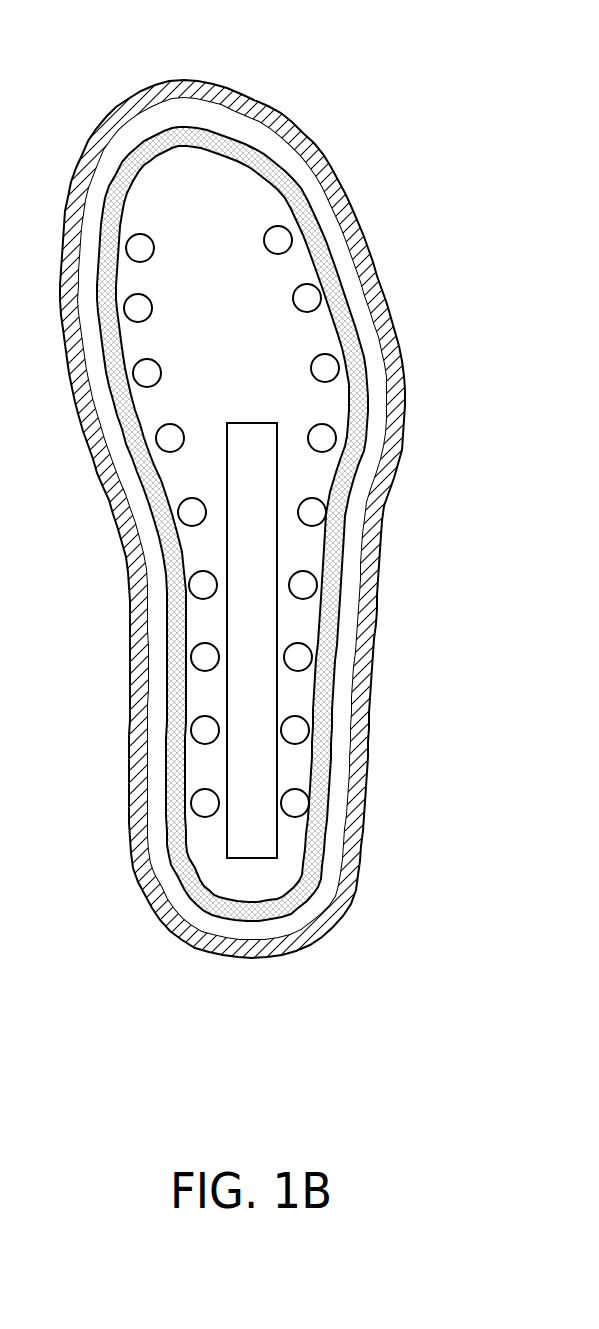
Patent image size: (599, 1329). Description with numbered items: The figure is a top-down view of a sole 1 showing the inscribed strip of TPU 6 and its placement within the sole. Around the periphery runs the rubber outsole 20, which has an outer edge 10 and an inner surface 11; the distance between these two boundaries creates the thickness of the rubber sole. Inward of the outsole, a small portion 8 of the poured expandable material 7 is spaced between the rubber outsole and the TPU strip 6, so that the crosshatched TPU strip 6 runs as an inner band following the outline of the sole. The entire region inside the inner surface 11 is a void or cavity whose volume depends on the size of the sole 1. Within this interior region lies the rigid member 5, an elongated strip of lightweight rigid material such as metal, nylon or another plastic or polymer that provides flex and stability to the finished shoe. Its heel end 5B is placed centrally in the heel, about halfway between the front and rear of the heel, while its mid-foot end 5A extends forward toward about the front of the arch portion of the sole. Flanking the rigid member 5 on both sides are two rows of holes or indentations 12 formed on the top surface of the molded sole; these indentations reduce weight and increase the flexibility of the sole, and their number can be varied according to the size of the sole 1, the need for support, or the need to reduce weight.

The sole 1 is at (132, 945).
The outer edge 10 is at (180, 78).
The inner surface 11 is at (220, 100).
The rubber outsole 20 is at (288, 135).
The small portion of poured expandable material 8 is at (357, 278).
The strip of TPU 6 is at (147, 137).
The poured expandable material 7 is at (145, 210).
The holes or indentations 12 is at (280, 240).
The rigid member 5 is at (252, 602).
The mid-foot end 5A is at (262, 421).
The heel end 5B is at (257, 858).